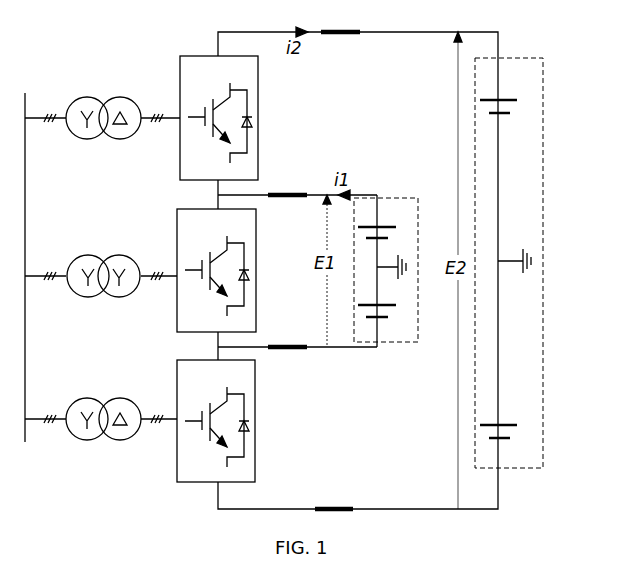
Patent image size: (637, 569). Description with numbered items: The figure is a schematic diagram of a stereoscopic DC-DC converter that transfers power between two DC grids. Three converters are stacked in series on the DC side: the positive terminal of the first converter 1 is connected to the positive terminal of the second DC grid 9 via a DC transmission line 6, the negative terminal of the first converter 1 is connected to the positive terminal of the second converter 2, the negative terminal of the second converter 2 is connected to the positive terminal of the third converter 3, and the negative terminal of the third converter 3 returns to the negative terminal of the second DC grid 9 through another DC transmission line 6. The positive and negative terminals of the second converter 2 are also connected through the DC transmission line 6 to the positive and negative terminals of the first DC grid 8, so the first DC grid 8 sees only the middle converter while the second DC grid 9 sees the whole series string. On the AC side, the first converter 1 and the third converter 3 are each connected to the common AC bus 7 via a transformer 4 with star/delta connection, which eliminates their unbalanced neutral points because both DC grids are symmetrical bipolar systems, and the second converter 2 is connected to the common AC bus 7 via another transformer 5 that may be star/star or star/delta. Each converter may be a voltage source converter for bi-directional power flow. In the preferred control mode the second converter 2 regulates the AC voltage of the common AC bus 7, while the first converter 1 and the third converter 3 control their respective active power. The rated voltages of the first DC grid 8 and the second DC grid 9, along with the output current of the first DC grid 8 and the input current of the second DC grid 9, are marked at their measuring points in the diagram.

The first converter 1 is at (259, 87).
The second converter 2 is at (257, 242).
The third converter 3 is at (257, 406).
The transformer 4 is at (103, 96).
The transformer 5 is at (97, 253).
The DC transmission line 6 is at (352, 43).
The common AC bus 7 is at (47, 85).
The first DC grid 8 is at (380, 198).
The second DC grid 9 is at (543, 259).